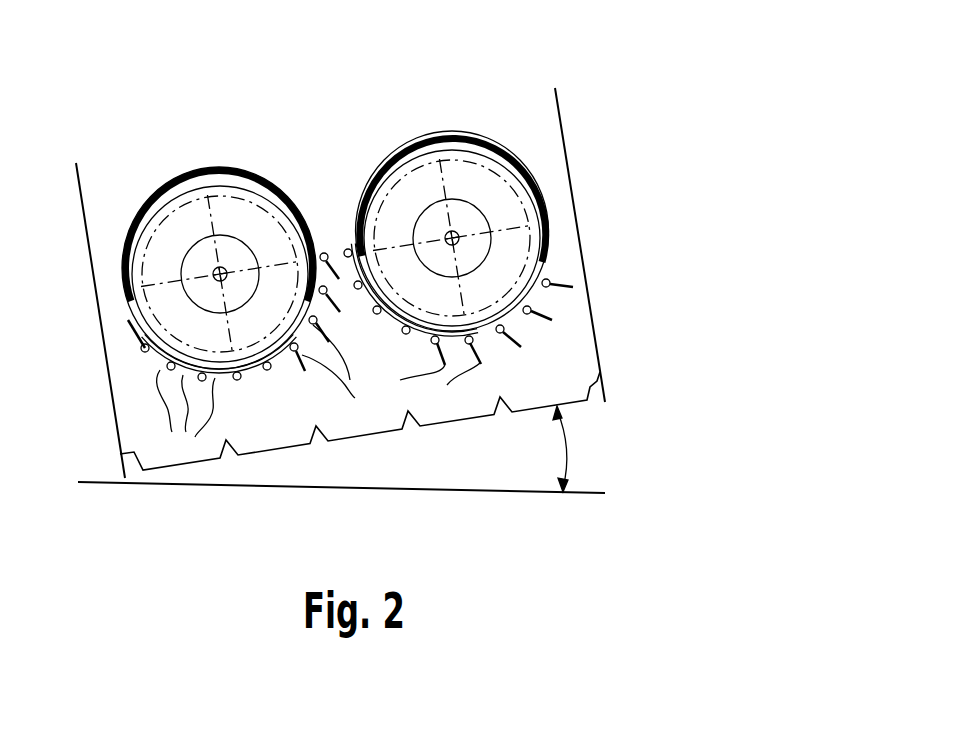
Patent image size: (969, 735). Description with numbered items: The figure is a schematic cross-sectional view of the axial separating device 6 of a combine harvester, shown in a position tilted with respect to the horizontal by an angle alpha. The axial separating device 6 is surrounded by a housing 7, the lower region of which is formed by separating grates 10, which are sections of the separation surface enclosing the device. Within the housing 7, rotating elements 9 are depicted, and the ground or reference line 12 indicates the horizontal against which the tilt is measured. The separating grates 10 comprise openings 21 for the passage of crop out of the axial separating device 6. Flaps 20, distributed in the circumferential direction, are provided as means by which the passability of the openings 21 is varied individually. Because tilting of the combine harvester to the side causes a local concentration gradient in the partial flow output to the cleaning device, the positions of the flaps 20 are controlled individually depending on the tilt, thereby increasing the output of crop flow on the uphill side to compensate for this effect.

The axial separating device 6 is at (607, 110).
The housing 7 is at (236, 165).
The rotating wheel brush 9 is at (209, 170).
The separating grates 10 is at (141, 360).
The platform / ground surface 12 is at (347, 440).
The flaps 20 is at (437, 358).
The openings 21 is at (548, 268).